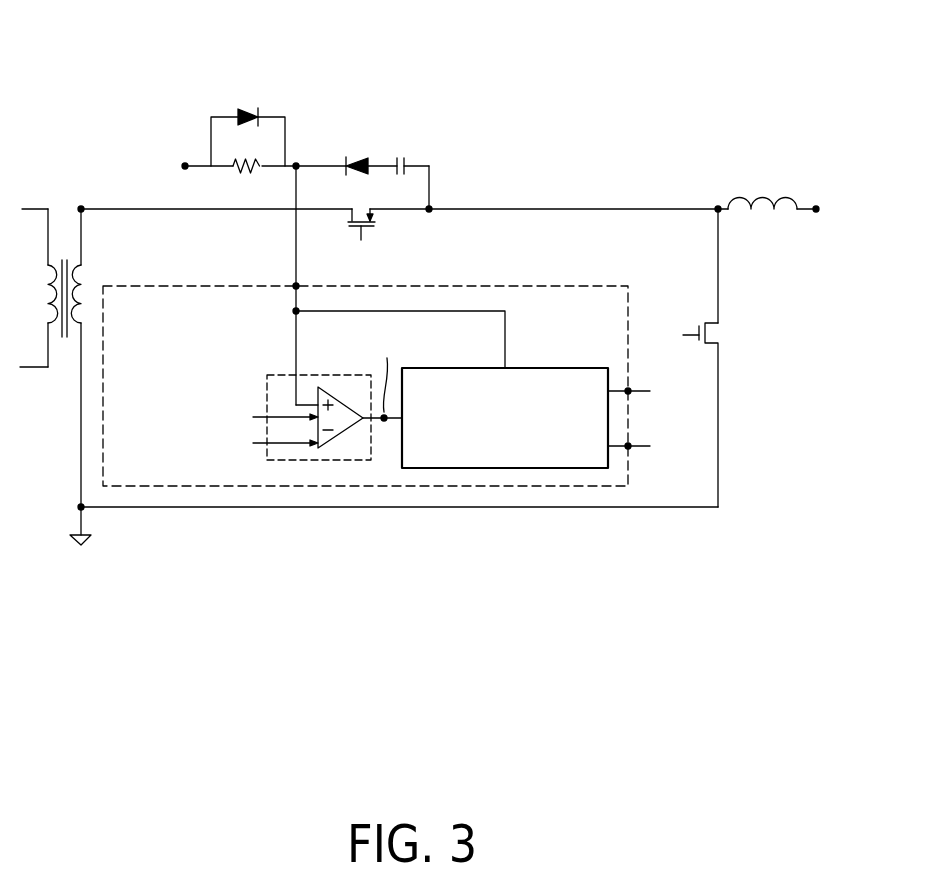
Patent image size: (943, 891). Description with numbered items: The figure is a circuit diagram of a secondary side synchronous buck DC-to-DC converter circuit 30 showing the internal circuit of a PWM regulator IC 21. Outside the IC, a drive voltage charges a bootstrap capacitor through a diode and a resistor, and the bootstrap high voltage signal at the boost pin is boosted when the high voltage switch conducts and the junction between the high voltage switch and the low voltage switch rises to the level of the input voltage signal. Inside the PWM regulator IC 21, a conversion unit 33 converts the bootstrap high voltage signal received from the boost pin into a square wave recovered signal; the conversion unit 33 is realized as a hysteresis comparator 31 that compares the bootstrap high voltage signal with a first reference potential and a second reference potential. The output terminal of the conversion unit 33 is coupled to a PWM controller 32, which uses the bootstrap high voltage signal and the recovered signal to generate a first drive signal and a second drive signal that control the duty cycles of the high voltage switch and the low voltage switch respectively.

The secondary side synchronous buck DC-to-DC converter circuit 30 is at (60, 31).
The PWM regulator IC 21 is at (527, 486).
The hysteresis comparator 31 is at (342, 435).
The PWM controller 32 is at (432, 468).
The conversion unit 33 is at (293, 460).